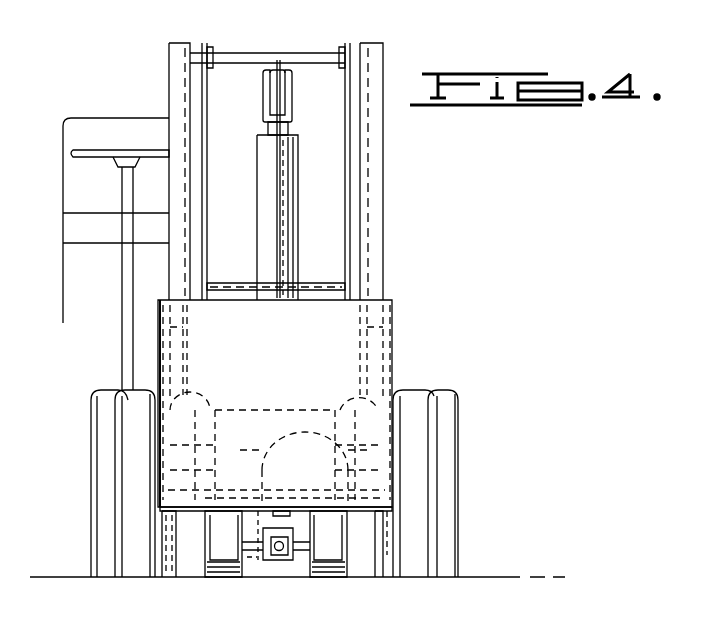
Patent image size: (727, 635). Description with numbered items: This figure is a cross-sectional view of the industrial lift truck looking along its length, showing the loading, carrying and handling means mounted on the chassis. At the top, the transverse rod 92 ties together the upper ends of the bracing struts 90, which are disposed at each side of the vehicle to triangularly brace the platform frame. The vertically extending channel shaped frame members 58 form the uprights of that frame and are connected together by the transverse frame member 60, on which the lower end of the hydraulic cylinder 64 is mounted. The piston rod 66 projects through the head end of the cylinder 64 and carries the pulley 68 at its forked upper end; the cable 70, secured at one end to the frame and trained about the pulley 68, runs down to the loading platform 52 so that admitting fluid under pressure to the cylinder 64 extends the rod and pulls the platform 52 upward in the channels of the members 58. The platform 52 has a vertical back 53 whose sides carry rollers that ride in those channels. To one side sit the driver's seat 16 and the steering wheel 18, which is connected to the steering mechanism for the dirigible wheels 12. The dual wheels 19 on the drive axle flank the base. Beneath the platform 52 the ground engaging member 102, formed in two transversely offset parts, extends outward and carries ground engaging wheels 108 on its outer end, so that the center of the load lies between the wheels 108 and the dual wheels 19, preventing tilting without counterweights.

The dirigible wheels 12 is at (100, 546).
The driver's seat 16 is at (73, 226).
The steering wheel 18 is at (74, 152).
The dual wheels 19 is at (130, 572).
The loading platform 52 is at (358, 505).
The vertical back 53 is at (356, 337).
The channel shaped frame members 58 is at (172, 253).
The transverse frame member 60 is at (325, 286).
The cylinder 64 is at (290, 217).
The piston rod 66 is at (290, 128).
The pulley 68 is at (285, 72).
The cable 70 is at (280, 166).
The strut 90 is at (207, 80).
The transverse rod 92 is at (308, 52).
The ground engaging member 102 is at (270, 560).
The ground engaging wheels 108 is at (222, 570).